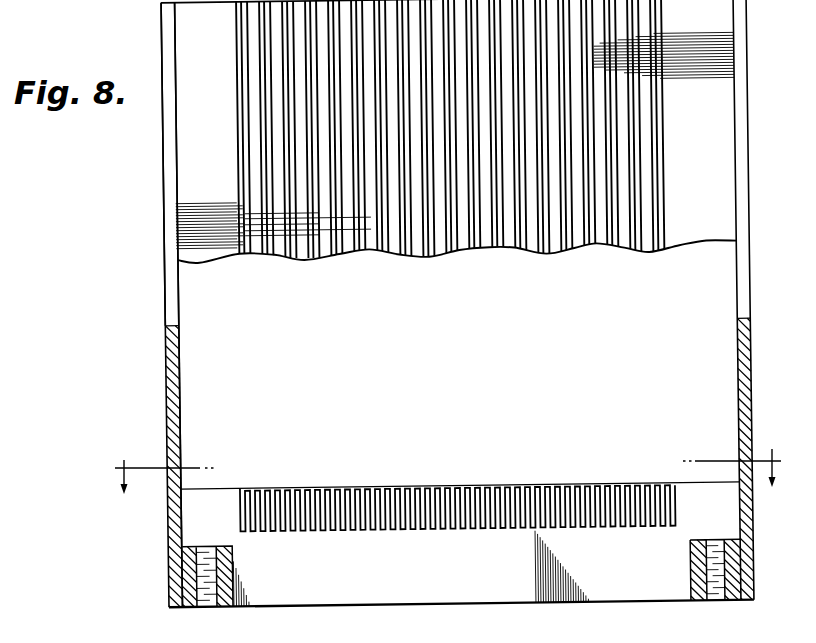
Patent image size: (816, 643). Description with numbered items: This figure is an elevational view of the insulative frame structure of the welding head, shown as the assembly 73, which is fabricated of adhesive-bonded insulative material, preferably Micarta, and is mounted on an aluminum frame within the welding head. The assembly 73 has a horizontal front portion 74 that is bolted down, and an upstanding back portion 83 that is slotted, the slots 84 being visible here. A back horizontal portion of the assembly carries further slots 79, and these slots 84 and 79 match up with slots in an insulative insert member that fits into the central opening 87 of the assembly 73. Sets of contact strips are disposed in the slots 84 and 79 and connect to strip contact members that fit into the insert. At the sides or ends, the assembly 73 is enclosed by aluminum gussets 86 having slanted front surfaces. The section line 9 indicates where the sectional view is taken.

The upstanding back portion 83 is at (184, 163).
The slots 84 is at (450, 256).
The insulative assembly 73 is at (158, 349).
The aluminum gussets 86 is at (178, 420).
The section line 9- 9 is at (441, 459).
The slots 79 is at (536, 487).
The central opening 87 is at (251, 582).
The horizontal front portion 74 is at (677, 600).